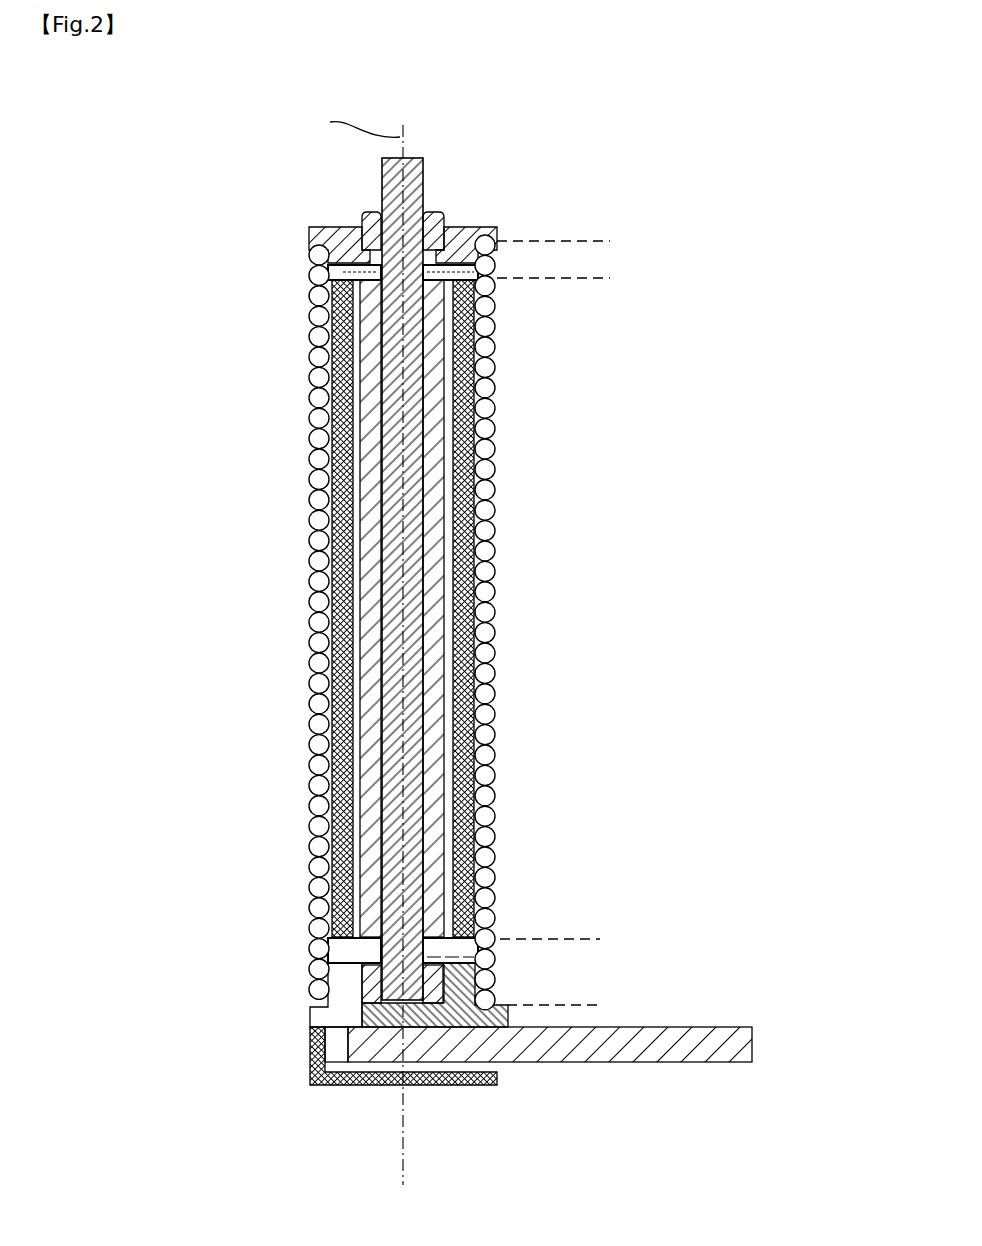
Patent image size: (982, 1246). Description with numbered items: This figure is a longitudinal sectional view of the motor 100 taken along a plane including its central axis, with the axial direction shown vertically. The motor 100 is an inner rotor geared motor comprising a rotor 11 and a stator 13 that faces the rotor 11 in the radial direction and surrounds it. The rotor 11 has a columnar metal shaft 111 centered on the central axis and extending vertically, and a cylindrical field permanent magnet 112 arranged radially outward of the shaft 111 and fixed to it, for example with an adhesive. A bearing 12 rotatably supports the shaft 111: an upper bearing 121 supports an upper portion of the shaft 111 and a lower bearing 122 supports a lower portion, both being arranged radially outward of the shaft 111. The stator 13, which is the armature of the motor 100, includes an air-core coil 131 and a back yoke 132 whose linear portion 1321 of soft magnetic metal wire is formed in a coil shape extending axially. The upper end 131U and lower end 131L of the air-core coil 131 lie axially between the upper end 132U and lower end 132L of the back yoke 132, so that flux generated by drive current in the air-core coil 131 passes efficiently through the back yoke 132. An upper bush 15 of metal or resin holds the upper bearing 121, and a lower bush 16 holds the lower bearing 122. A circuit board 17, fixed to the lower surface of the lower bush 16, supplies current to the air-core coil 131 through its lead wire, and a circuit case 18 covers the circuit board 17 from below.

The motor 100 is at (636, 168).
The rotor 11 is at (456, 632).
The shaft 111 is at (383, 192).
The magnet 112 is at (490, 672).
The bearing 12 is at (503, 632).
The upper bearing 121 is at (440, 230).
The lower bearing 122 is at (482, 1027).
The stator 13 is at (511, 609).
The air-core coil 131 is at (490, 424).
The upper end of the air-core coil 131U is at (575, 278).
The lower end of the air-core coil 131L is at (560, 938).
The back yoke 132 is at (479, 608).
The linear portion 1321 is at (490, 554).
The upper end of the back yoke 132U is at (575, 242).
The lower end of the back yoke 132L is at (548, 1005).
The upper bush 15 is at (490, 228).
The lower bush 16 is at (360, 1015).
The circuit board 17 is at (742, 1026).
The circuit case 18 is at (310, 1083).